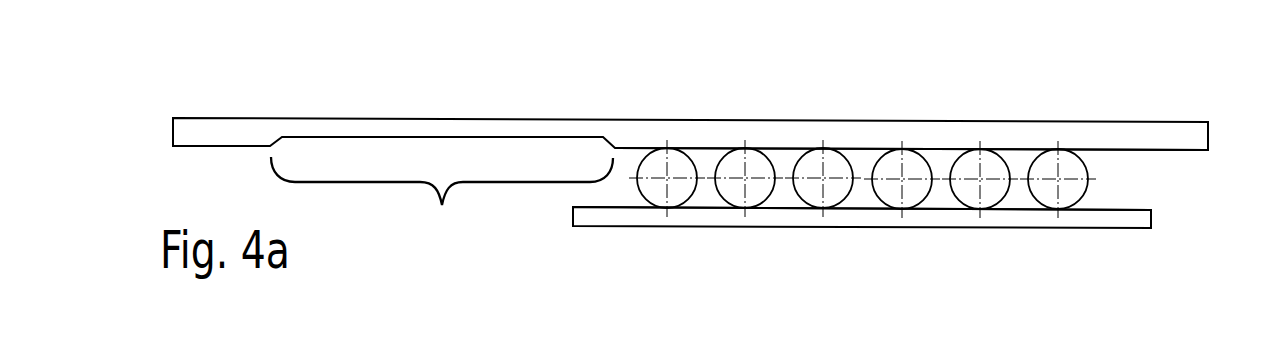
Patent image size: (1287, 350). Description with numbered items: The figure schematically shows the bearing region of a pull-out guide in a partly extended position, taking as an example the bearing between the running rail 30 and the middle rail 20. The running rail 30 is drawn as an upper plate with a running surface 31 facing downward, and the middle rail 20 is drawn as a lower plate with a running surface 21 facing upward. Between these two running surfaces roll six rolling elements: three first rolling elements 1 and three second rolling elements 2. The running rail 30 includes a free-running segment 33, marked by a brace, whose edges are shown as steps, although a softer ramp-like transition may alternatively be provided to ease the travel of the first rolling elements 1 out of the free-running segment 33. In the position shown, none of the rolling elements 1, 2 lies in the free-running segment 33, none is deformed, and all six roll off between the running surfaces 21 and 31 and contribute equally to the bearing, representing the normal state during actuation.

The first rolling elements 1 is at (820, 167).
The second rolling elements 2 is at (1052, 170).
The middle rail 20 is at (1115, 222).
The running surface 21 is at (905, 245).
The running rail 30 is at (1153, 135).
The running surface 31 is at (1185, 150).
The free-running segment 33 is at (442, 192).